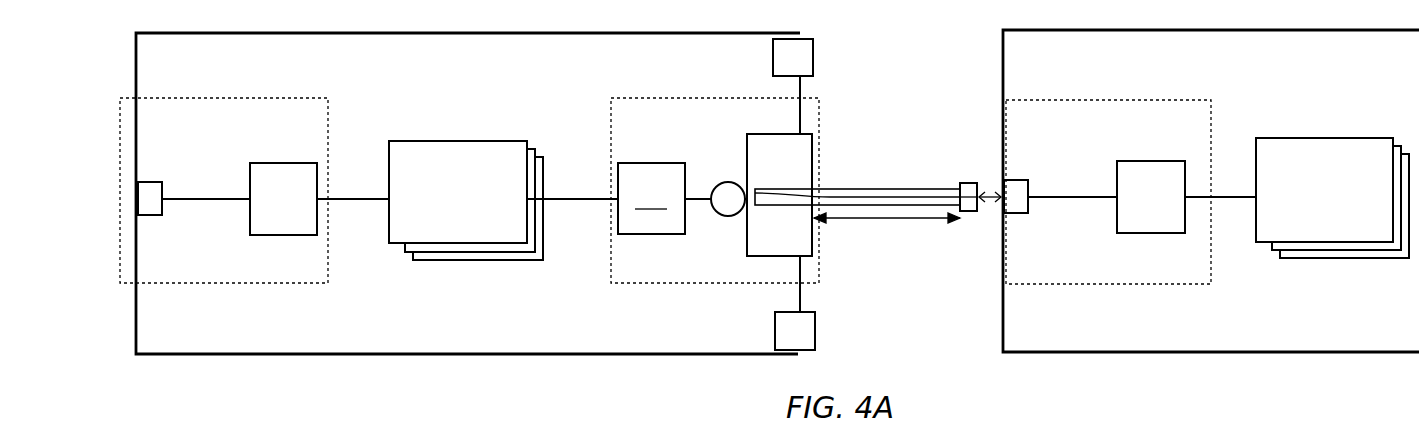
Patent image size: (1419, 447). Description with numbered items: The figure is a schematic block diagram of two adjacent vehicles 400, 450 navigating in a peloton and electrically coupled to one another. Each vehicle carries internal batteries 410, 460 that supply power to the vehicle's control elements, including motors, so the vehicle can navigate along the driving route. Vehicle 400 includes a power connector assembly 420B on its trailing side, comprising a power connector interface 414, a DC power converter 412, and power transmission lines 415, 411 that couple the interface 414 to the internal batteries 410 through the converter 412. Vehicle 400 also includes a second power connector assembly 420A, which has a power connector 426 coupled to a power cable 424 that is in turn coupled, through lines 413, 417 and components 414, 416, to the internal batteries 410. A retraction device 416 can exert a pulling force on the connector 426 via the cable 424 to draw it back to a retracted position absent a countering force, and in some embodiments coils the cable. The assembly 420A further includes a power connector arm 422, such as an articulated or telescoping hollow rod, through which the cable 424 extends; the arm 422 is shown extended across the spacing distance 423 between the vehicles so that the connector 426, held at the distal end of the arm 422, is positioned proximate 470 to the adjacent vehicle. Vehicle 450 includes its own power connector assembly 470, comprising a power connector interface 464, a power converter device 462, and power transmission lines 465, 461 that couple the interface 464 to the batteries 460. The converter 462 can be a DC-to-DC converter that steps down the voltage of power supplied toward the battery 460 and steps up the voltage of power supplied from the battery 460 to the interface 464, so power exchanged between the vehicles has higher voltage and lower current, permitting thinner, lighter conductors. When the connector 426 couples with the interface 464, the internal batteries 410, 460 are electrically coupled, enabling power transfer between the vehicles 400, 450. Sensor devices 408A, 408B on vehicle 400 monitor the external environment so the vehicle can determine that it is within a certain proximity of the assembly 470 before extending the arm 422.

The vehicle 400 is at (478, 83).
The vehicle 450 is at (1345, 81).
The power connector assembly 420B is at (316, 121).
The power connector assembly 420A is at (662, 121).
The power connector assembly 470 is at (1190, 120).
The power connector interface 414 is at (154, 182).
The power transmission line 415 is at (200, 199).
The DC power converter 412 is at (267, 209).
The power transmission line 411 is at (335, 199).
The internal batteries 410 is at (438, 226).
The line 413 is at (570, 199).
The line 417 is at (697, 197).
The retraction device 416 is at (728, 212).
The sensor device 408B is at (787, 54).
The sensor device 408A is at (786, 333).
The power connector arm 422 is at (853, 189).
The power cable 424 is at (898, 197).
The power connector 426 is at (969, 183).
The spacing distance 423 is at (870, 222).
The power connector interface 464 is at (1020, 180).
The power transmission line 465 is at (1065, 197).
The power converter device 462 is at (1135, 207).
The power transmission line 461 is at (1215, 197).
The internal batteries 460 is at (1304, 223).